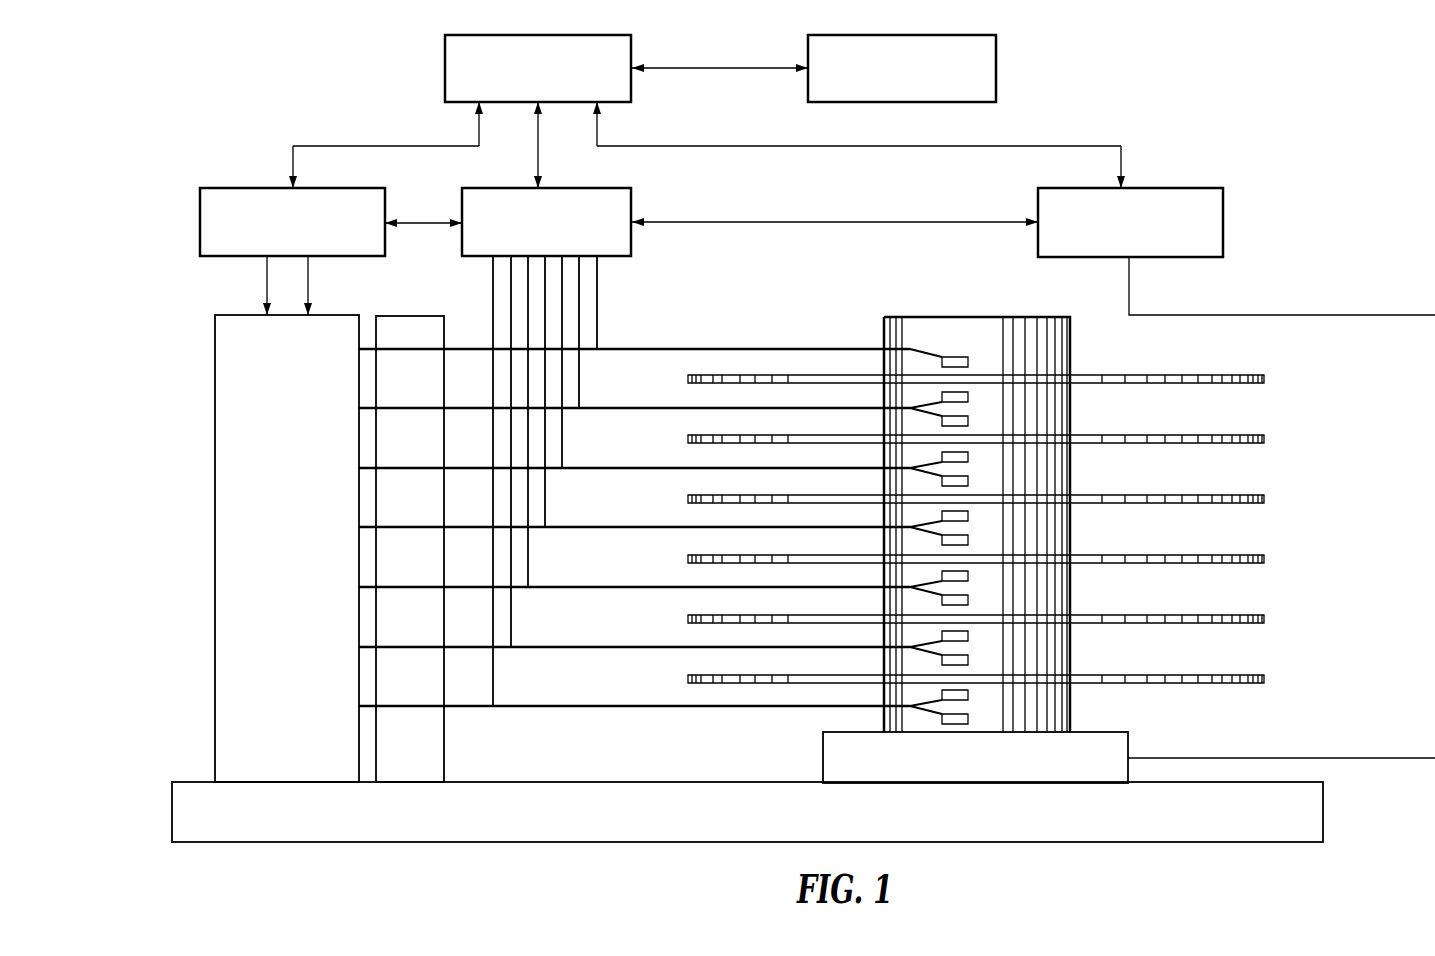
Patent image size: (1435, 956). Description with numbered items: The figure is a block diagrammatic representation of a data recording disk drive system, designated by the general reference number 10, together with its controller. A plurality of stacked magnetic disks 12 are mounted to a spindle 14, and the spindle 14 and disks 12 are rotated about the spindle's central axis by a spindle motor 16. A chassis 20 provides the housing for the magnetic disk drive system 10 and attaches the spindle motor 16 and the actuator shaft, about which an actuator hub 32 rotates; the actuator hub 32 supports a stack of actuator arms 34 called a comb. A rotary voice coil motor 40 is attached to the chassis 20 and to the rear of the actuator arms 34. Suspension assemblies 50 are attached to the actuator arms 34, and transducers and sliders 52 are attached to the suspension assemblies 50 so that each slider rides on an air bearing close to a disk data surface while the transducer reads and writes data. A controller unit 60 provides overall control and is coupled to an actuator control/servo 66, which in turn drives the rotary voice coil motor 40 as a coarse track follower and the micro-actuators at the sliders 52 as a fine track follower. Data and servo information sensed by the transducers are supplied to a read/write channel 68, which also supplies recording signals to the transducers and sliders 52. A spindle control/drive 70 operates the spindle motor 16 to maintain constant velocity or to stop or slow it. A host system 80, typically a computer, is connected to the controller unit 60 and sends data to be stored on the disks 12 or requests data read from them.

The magnetic disk drive system 10 is at (199, 313).
The magnetic disks 12 is at (1248, 384).
The spindle 14 is at (1070, 344).
The spindle motor 16 is at (1116, 732).
The chassis 20 is at (280, 842).
The actuator hub 32 is at (416, 316).
The actuator arms 34 is at (633, 349).
The rotary voice coil motor 40 is at (213, 645).
The suspension assemblies 50 is at (927, 406).
The transducers and sliders 52 is at (968, 396).
The controller unit 60 is at (445, 86).
The actuator control/servo 66 is at (213, 188).
The read/write channel 68 is at (632, 243).
The spindle control/drive 70 is at (1223, 233).
The host system 80 is at (997, 86).